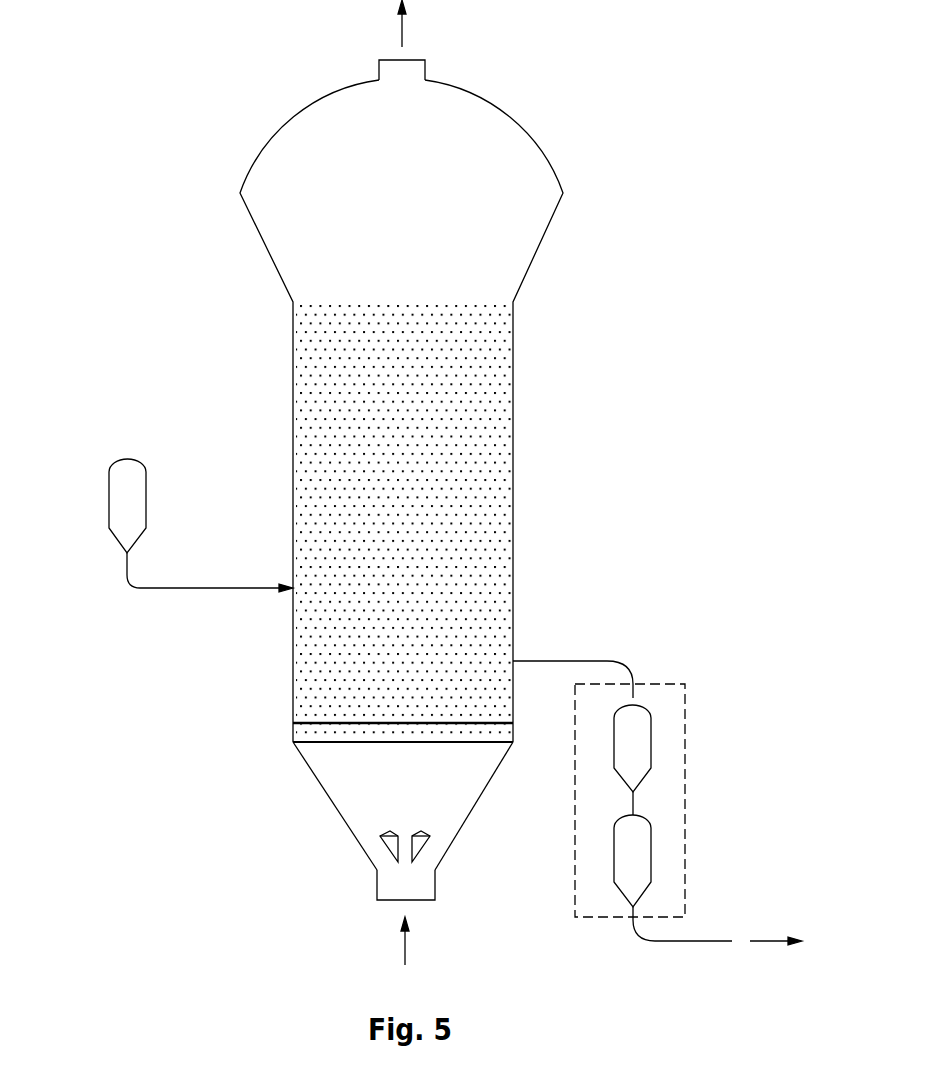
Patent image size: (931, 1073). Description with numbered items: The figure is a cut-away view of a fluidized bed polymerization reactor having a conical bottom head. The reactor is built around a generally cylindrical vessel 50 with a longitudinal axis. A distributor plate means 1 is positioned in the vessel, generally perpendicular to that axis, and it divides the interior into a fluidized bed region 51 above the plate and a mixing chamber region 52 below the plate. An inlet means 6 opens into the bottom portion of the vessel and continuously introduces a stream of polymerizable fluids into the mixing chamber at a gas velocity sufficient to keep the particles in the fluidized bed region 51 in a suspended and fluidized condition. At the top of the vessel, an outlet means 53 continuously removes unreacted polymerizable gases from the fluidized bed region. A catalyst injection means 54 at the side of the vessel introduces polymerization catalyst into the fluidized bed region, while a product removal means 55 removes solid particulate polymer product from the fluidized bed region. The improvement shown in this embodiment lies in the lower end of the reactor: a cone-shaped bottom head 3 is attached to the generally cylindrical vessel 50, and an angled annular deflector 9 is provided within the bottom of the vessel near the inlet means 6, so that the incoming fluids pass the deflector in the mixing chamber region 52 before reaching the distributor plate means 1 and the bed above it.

The distributor plate means 1 is at (338, 723).
The cone-shaped bottom head 3 is at (473, 808).
The inlet means 6 is at (435, 888).
The angled annular deflector 9 is at (385, 848).
The generally cylindrical vessel 50 is at (513, 467).
The fluidized bed region 51 is at (483, 342).
The mixing chamber region 52 is at (378, 773).
The outlet means 53 is at (426, 70).
The catalyst injection means 54 is at (127, 459).
The product removal means 55 is at (650, 684).